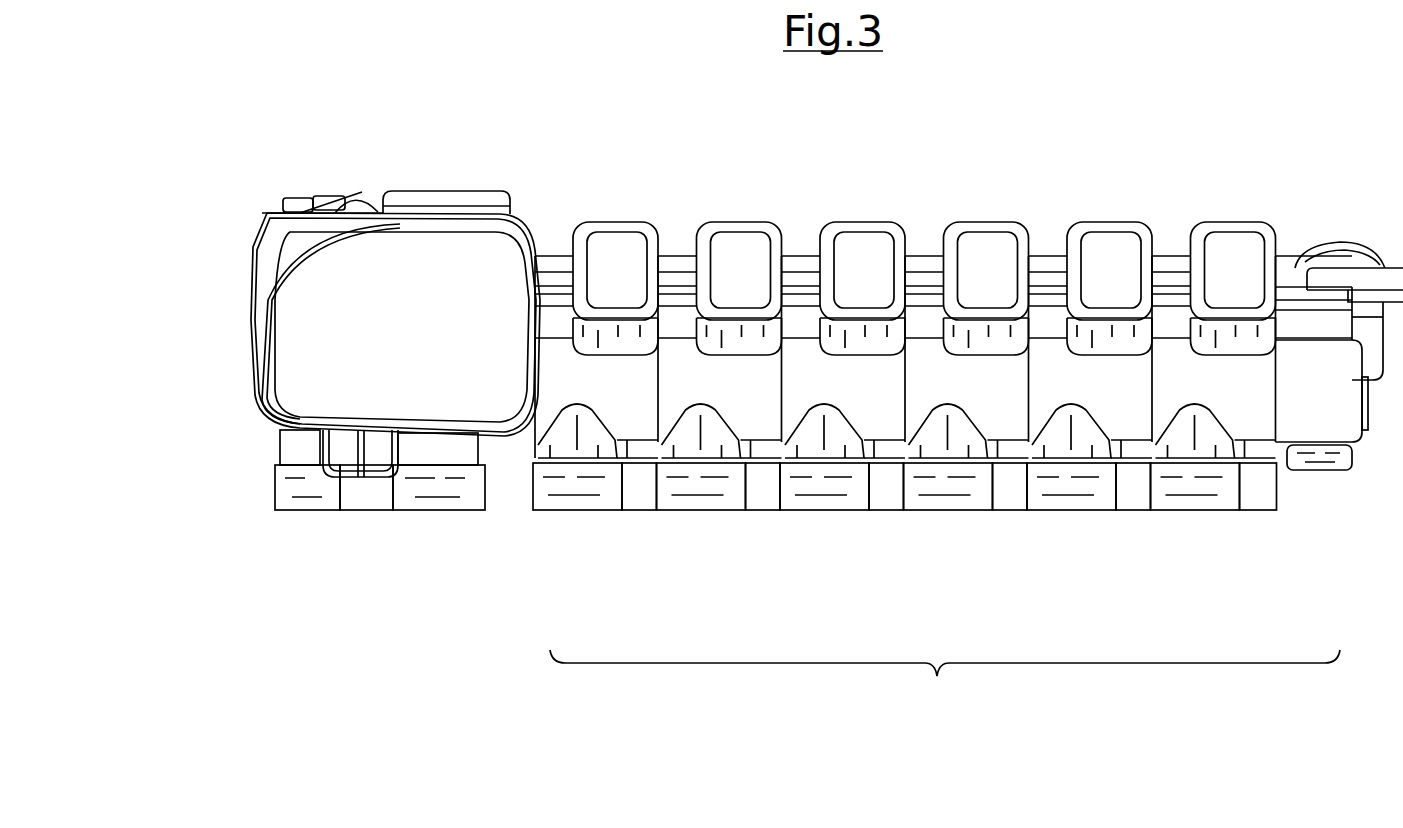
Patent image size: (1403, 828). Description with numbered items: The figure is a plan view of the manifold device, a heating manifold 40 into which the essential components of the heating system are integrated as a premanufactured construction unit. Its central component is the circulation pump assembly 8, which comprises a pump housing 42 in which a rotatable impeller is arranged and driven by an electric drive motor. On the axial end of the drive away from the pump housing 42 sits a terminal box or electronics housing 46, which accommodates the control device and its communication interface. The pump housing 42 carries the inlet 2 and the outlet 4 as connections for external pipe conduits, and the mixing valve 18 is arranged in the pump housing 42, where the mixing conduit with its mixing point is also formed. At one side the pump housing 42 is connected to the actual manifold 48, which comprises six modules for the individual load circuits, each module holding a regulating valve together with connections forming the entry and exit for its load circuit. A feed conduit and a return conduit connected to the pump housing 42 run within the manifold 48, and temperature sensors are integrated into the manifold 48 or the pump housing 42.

The inlet 2 is at (322, 512).
The outlet 4 is at (460, 512).
The circulation pump assembly 8 is at (247, 418).
The mixing valve 18 is at (492, 191).
The heating manifold 40 is at (928, 180).
The pump housing 42 is at (260, 212).
The electronics housing 46 is at (276, 302).
The manifold 48 is at (945, 694).